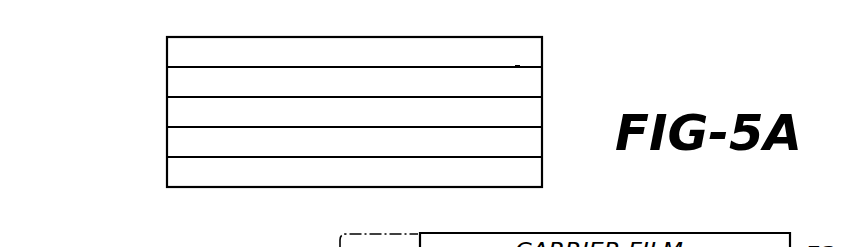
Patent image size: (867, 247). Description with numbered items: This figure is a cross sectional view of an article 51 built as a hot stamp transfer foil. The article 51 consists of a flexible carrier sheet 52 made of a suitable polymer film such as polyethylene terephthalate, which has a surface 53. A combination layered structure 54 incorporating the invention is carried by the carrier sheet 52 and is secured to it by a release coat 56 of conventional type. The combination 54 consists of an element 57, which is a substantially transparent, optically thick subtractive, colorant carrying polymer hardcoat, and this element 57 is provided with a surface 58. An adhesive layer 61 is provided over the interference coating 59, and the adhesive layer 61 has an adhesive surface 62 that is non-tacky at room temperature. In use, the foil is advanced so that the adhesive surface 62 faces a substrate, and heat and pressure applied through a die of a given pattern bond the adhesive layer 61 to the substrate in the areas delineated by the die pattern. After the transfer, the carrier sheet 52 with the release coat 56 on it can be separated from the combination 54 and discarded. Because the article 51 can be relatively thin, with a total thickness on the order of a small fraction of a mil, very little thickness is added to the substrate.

The article 51 is at (160, 39).
The carrier sheet 52 is at (542, 58).
The surface 53 is at (517, 66).
The combination layered structure 54 is at (163, 97).
The release coat 56 is at (542, 87).
The element 57 is at (542, 119).
The surface 58 is at (530, 132).
The interference coating 59 is at (193, 148).
The adhesive layer 61 is at (542, 176).
The adhesive surface 62 is at (248, 190).